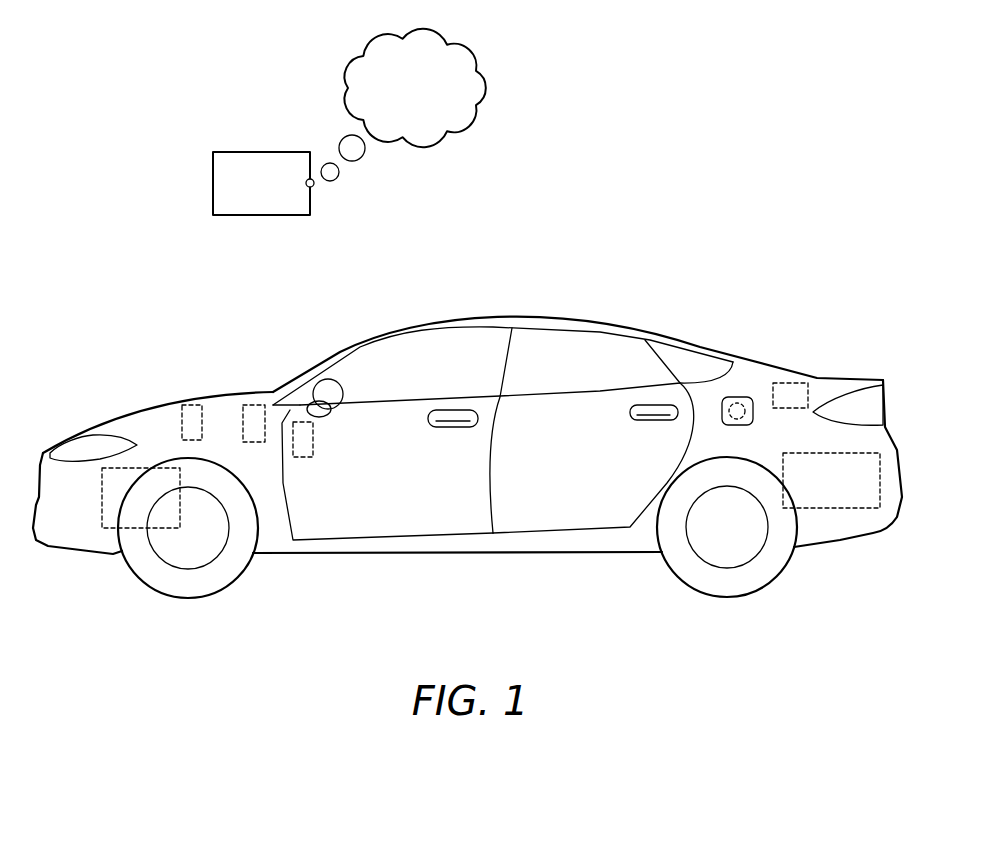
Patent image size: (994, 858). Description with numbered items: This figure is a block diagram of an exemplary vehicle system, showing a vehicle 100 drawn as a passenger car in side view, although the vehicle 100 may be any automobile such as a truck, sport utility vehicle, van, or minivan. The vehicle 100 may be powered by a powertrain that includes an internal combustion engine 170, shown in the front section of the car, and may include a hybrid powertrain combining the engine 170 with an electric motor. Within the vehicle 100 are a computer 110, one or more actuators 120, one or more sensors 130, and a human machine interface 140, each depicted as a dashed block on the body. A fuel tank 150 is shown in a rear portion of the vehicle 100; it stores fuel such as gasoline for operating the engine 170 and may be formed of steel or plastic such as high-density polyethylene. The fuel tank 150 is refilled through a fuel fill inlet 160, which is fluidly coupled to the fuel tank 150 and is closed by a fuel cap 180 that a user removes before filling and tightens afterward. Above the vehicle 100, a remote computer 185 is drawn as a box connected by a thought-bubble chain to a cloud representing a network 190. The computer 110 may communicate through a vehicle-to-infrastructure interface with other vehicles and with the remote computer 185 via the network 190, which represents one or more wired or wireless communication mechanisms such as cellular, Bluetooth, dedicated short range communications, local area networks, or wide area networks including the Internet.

The vehicle 100 is at (493, 315).
The computer 110 is at (252, 403).
The actuator 120 is at (182, 403).
The sensor 130 is at (800, 381).
The human machine interface (HMI) 140 is at (297, 420).
The fuel tank 150 is at (827, 510).
The fuel fill inlet 160 is at (743, 386).
The internal combustion engine 170 is at (120, 467).
The fuel cap 180 is at (735, 395).
The remote computer 185 is at (263, 183).
The network 190 is at (403, 105).